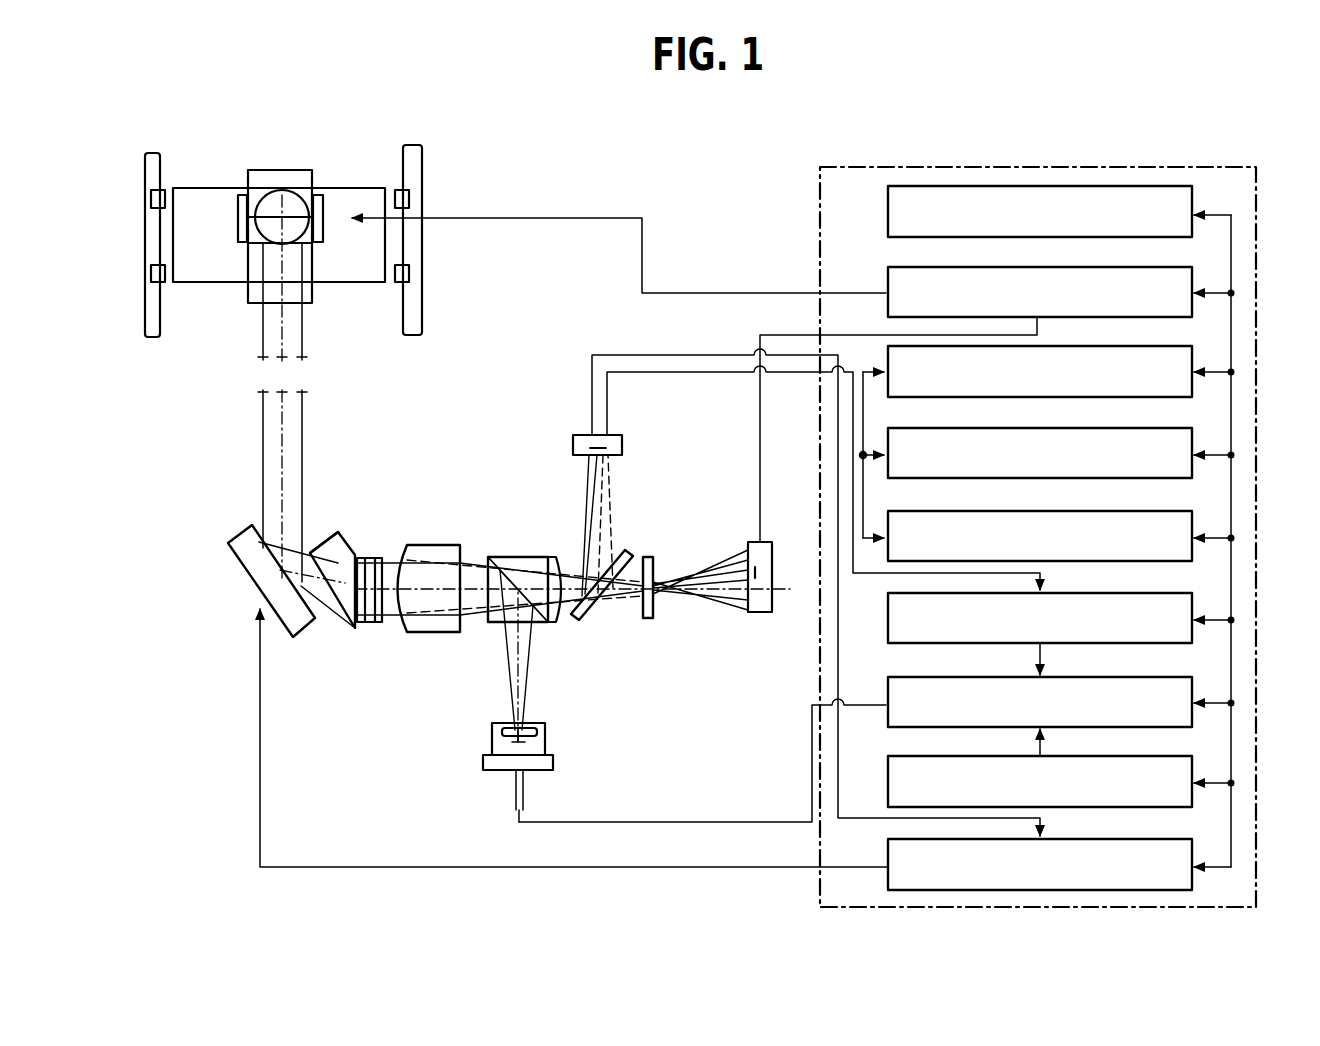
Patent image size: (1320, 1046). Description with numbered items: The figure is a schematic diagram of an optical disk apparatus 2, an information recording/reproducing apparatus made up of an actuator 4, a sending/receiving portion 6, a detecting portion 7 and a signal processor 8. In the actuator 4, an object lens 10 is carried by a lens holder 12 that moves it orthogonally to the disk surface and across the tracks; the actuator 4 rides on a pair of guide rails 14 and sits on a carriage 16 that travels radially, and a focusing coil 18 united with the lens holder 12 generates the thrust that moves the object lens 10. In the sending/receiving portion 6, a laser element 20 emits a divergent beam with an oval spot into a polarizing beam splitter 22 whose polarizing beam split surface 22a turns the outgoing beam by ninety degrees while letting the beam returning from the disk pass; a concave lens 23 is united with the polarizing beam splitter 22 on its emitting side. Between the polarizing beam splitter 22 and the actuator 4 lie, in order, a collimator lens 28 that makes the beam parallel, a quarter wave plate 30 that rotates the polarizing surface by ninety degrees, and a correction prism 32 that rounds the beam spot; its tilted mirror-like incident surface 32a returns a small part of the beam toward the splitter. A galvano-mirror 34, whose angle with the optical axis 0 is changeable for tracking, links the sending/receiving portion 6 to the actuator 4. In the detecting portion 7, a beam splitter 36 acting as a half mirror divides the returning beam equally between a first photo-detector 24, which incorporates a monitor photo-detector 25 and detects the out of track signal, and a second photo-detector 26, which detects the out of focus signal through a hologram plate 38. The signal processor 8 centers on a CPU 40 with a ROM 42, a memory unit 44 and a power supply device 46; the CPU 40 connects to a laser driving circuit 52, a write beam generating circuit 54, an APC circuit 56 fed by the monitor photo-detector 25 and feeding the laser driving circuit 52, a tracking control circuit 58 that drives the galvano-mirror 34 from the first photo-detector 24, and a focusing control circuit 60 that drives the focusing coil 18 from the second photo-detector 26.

The optical axis 0 is at (263, 350).
The optical disk apparatus 2 is at (480, 599).
The actuator 4 is at (285, 245).
The sending/receiving portion 6 is at (324, 583).
The detecting portion 7 is at (671, 513).
The signal processor 8 is at (818, 232).
The object lens 10 is at (265, 191).
The lens holder 12 is at (312, 262).
The guide rails 14 is at (145, 240).
The carriage 16 is at (205, 283).
The focusing coil 18 is at (238, 235).
The laser element 20 is at (483, 762).
The polarizing beam splitter 22 is at (538, 625).
The polarizing beam split surface 22a is at (517, 585).
The concave lens 23 is at (557, 624).
The first photo-detector 24 is at (596, 437).
The monitor photo-detector 25 is at (610, 448).
The second photo-detector 26 is at (748, 543).
The collimator lens 28 is at (425, 545).
The quarter wave plate 30 is at (370, 622).
The correction prism 32 is at (343, 608).
The incident surface 32a is at (362, 554).
The galvano-mirror 34 is at (262, 560).
The beam splitter 36 is at (634, 552).
The hologram plate 38 is at (657, 606).
The CPU 40 is at (1192, 512).
The ROM 42 is at (1192, 429).
The memory unit 44 is at (1192, 347).
The power supply device 46 is at (887, 222).
The laser driving circuit 52 is at (1192, 678).
The write beam generating circuit 54 is at (1192, 758).
The APC circuit 56 is at (1192, 594).
The tracking control circuit 58 is at (1192, 840).
The focusing control circuit 60 is at (887, 302).